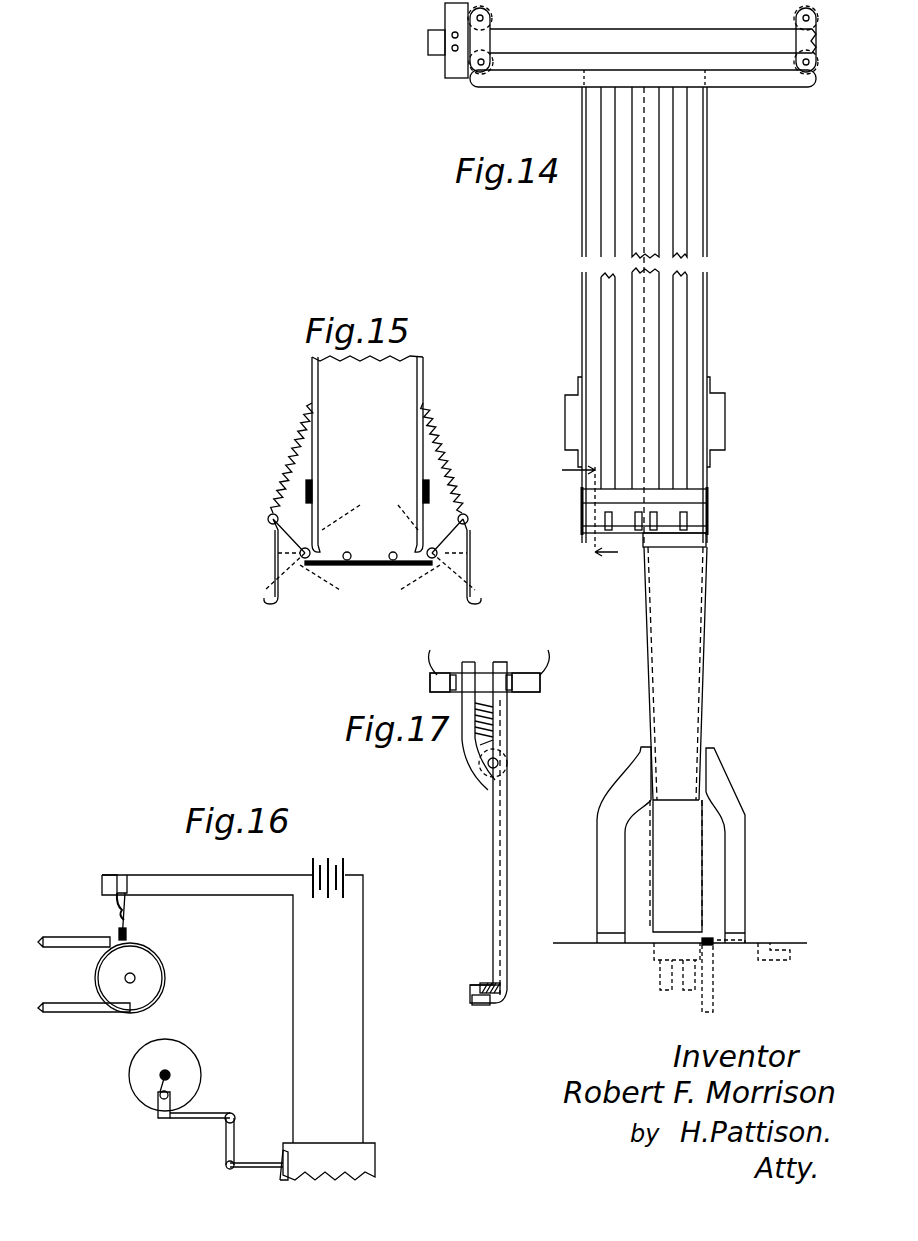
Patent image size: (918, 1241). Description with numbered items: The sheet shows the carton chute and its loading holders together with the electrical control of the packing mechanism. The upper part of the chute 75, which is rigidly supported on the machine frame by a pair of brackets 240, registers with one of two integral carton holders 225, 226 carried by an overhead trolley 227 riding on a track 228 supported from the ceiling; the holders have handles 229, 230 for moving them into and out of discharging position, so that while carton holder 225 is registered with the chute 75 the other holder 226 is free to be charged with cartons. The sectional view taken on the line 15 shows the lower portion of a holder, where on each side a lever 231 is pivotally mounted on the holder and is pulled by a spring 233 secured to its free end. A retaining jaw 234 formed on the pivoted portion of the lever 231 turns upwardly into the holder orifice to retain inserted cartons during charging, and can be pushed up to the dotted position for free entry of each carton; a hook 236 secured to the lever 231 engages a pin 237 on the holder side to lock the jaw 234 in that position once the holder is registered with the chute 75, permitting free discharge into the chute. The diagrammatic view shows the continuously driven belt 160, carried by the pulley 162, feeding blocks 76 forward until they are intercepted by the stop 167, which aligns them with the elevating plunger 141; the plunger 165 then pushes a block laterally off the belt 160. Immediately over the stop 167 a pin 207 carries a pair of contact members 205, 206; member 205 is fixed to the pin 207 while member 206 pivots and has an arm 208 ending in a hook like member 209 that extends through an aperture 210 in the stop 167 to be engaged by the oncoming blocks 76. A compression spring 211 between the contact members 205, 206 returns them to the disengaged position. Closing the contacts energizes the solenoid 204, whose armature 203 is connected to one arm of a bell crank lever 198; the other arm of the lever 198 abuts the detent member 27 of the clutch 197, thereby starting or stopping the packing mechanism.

In FIG. 14, the track 228 is at (587, 35).
In FIG. 14, the overhead trolley 227 is at (750, 80).
In FIG. 14, the carton holder 225 is at (707, 300).
In FIG. 14, the carton holder 226 is at (582, 350).
In FIG. 14, the handle 230 is at (565, 420).
In FIG. 14, the handle 229 is at (725, 420).
In FIG. 14, the section line 15 is at (571, 517).
In FIG. 14, the spring 233 is at (582, 505).
In FIG. 15, the spring 233 is at (291, 450).
In FIG. 14, the hook 236 is at (582, 533).
In FIG. 15, the hook 236 is at (262, 602).
In FIG. 14, the retaining jaw 234 is at (695, 536).
In FIG. 15, the retaining jaw 234 is at (346, 585).
In FIG. 14, the chute 75 is at (707, 632).
In FIG. 14, the brackets 240 is at (597, 820).
In FIG. 14, the elevating plunger 141 is at (657, 962).
In FIG. 14, the belt 160 is at (713, 975).
In FIG. 16, the belt 160 is at (65, 1012).
In FIG. 14, the plunger 165 is at (790, 940).
In FIG. 15, the lever 231 is at (292, 535).
In FIG. 15, the pin 237 is at (392, 552).
In FIG. 17, the contact member 205 is at (505, 712).
In FIG. 16, the contact member 205 is at (127, 893).
In FIG. 17, the contact member 206 is at (462, 737).
In FIG. 16, the contact member 206 is at (117, 893).
In FIG. 17, the pin 207 is at (500, 765).
In FIG. 17, the arm 208 is at (493, 870).
In FIG. 16, the arm 208 is at (128, 935).
In FIG. 17, the compression spring 211 is at (495, 742).
In FIG. 17, the stop 167 is at (480, 985).
In FIG. 16, the stop 167 is at (128, 925).
In FIG. 17, the aperture 210 is at (510, 993).
In FIG. 17, the hook like member 209 is at (485, 1005).
In FIG. 16, the solenoid 204 is at (368, 1150).
In FIG. 16, the blocks 76 is at (90, 935).
In FIG. 16, the pulley 162 is at (165, 996).
In FIG. 16, the clutch 197 is at (125, 1085).
In FIG. 16, the detent member 27 is at (158, 1113).
In FIG. 16, the bell crank lever 198 is at (215, 1133).
In FIG. 16, the armature 203 is at (283, 1160).